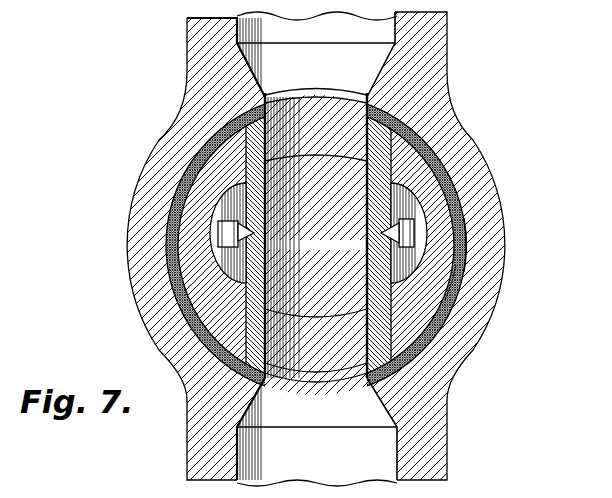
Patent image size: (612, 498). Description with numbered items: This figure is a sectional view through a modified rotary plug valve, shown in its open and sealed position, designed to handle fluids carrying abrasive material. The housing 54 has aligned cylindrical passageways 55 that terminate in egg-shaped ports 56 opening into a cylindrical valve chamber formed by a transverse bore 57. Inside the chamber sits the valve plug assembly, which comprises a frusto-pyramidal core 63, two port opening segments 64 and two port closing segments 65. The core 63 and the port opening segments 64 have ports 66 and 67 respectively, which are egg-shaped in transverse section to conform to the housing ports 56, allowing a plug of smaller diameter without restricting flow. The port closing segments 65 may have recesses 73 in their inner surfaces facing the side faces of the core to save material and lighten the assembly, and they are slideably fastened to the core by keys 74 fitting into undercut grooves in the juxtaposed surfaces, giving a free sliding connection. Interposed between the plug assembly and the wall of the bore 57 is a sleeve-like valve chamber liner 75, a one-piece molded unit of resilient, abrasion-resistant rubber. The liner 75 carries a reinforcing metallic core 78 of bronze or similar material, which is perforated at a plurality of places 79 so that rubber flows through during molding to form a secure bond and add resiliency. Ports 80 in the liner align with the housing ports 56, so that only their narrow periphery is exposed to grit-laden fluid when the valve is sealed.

The housing 54 is at (492, 160).
The cylindrical passageways 55 is at (238, 20).
The egg-shaped ports 56 is at (342, 383).
The transverse bore 57 is at (467, 237).
The frusto-pyramidal core 63 is at (266, 187).
The port opening segments 64 is at (228, 125).
The port closing segments 65 is at (200, 193).
The core port 66 is at (367, 270).
The segment ports 67 is at (367, 122).
The recesses 73 is at (198, 272).
The keys 74 is at (382, 232).
The valve chamber liner 75 is at (463, 257).
The reinforcing metallic core 78 is at (453, 283).
The perforations 79 is at (443, 300).
The liner ports 80 is at (297, 384).